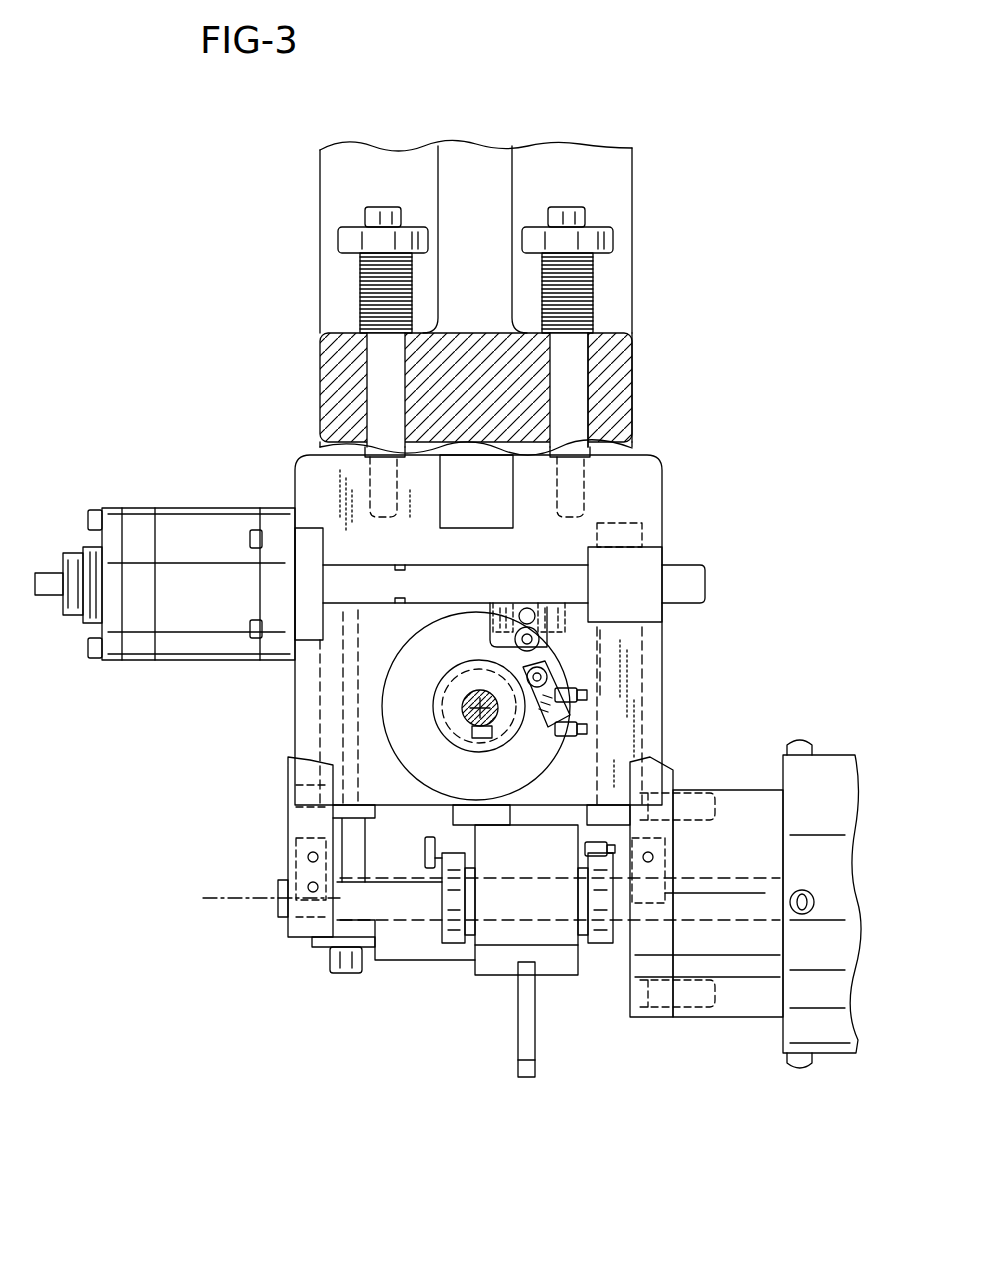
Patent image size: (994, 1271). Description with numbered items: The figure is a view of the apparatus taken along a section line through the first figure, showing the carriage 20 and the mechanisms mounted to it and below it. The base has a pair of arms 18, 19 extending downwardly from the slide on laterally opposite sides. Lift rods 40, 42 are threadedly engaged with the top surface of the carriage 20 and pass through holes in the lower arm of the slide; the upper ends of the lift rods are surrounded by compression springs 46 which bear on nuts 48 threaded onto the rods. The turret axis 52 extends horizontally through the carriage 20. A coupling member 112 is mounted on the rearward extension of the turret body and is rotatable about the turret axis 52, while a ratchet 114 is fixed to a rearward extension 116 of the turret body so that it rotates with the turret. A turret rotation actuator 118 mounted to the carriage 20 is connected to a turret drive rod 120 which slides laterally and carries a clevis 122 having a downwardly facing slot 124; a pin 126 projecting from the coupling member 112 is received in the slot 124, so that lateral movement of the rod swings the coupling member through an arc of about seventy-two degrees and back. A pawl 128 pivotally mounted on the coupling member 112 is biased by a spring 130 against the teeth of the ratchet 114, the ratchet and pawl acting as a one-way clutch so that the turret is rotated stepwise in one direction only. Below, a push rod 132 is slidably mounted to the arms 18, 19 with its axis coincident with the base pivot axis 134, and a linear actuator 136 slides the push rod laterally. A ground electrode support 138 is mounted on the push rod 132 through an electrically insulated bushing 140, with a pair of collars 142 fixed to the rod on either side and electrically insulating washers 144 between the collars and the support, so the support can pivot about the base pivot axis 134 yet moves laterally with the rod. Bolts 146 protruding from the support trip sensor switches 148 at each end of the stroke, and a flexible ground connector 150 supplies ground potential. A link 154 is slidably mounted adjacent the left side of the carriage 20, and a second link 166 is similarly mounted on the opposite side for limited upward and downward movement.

The arm 18 is at (287, 860).
The arm 19 is at (668, 775).
The carriage 20 is at (667, 472).
The lift rod 40 is at (380, 387).
The lift rod 42 is at (576, 404).
The compression spring 46 is at (362, 298).
The nut 48 is at (345, 238).
The turret axis 52 is at (488, 716).
The coupling member 112 is at (560, 660).
The ratchet 114 is at (437, 706).
The rearward extension 116 is at (470, 698).
The turret rotation actuator 118 is at (177, 518).
The turret drive rod 120 is at (688, 560).
The clevis 122 is at (545, 630).
The slot 124 is at (523, 612).
The pin 126 is at (492, 647).
The pawl 128 is at (575, 690).
The spring 130 is at (576, 726).
The push rod 132 is at (400, 908).
The base pivot axis 134 is at (223, 898).
The linear actuator 136 is at (790, 1042).
The ground electrode support 138 is at (540, 982).
The electrically insulated bushing 140 is at (503, 920).
The collar 142 is at (452, 940).
The electrically insulating washer 144 is at (470, 943).
The bolt 146 is at (428, 840).
The sensor switch 148 is at (300, 840).
The flexible ground connector 150 is at (532, 1065).
The link 154 is at (325, 665).
The second link 166 is at (635, 668).